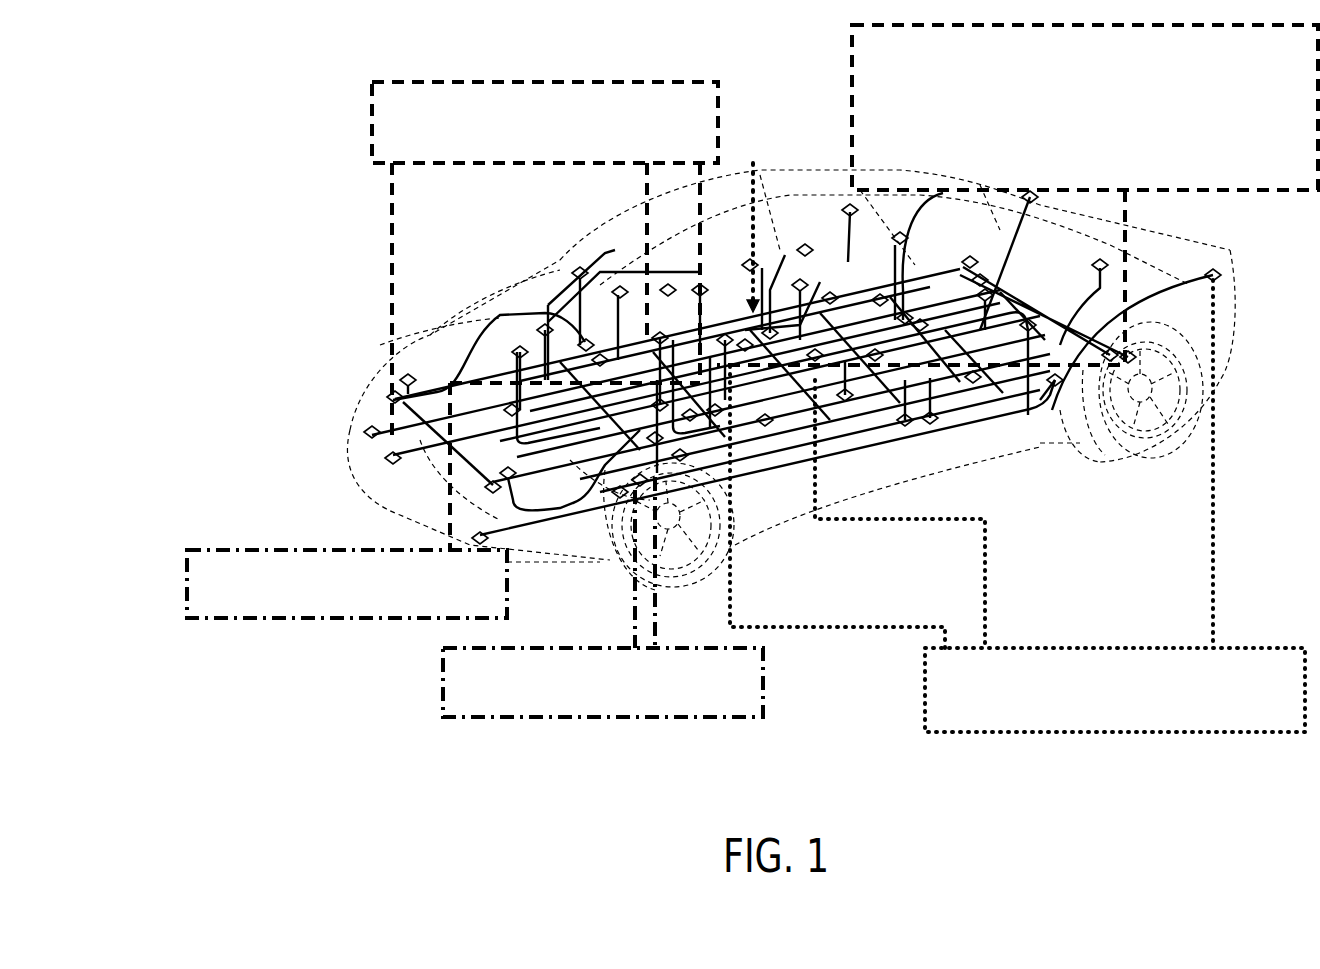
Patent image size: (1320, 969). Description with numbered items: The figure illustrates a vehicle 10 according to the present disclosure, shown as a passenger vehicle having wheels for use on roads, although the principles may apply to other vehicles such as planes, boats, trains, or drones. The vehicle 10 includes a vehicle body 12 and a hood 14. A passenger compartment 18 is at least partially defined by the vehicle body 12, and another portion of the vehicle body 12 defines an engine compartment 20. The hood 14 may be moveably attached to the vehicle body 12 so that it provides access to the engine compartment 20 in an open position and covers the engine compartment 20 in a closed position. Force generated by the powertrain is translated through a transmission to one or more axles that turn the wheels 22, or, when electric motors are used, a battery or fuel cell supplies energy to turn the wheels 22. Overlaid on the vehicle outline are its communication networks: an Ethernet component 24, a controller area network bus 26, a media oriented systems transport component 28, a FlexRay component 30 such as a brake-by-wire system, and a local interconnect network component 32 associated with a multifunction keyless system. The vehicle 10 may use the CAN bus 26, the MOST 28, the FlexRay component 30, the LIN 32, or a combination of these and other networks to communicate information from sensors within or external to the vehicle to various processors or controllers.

The vehicle 10 is at (157, 174).
The vehicle body 12 is at (760, 307).
The hood 14 is at (495, 310).
The passenger compartment 18 is at (668, 257).
The engine compartment 20 is at (333, 385).
The wheels 22 is at (612, 548).
The Ethernet component 24 is at (165, 581).
The controller area network (CAN) bus 26 is at (355, 112).
The media oriented systems transport component (MOST) 28 is at (838, 98).
The FlexRay component 30 is at (417, 679).
The local interconnect network component (LIN) 32 is at (910, 679).